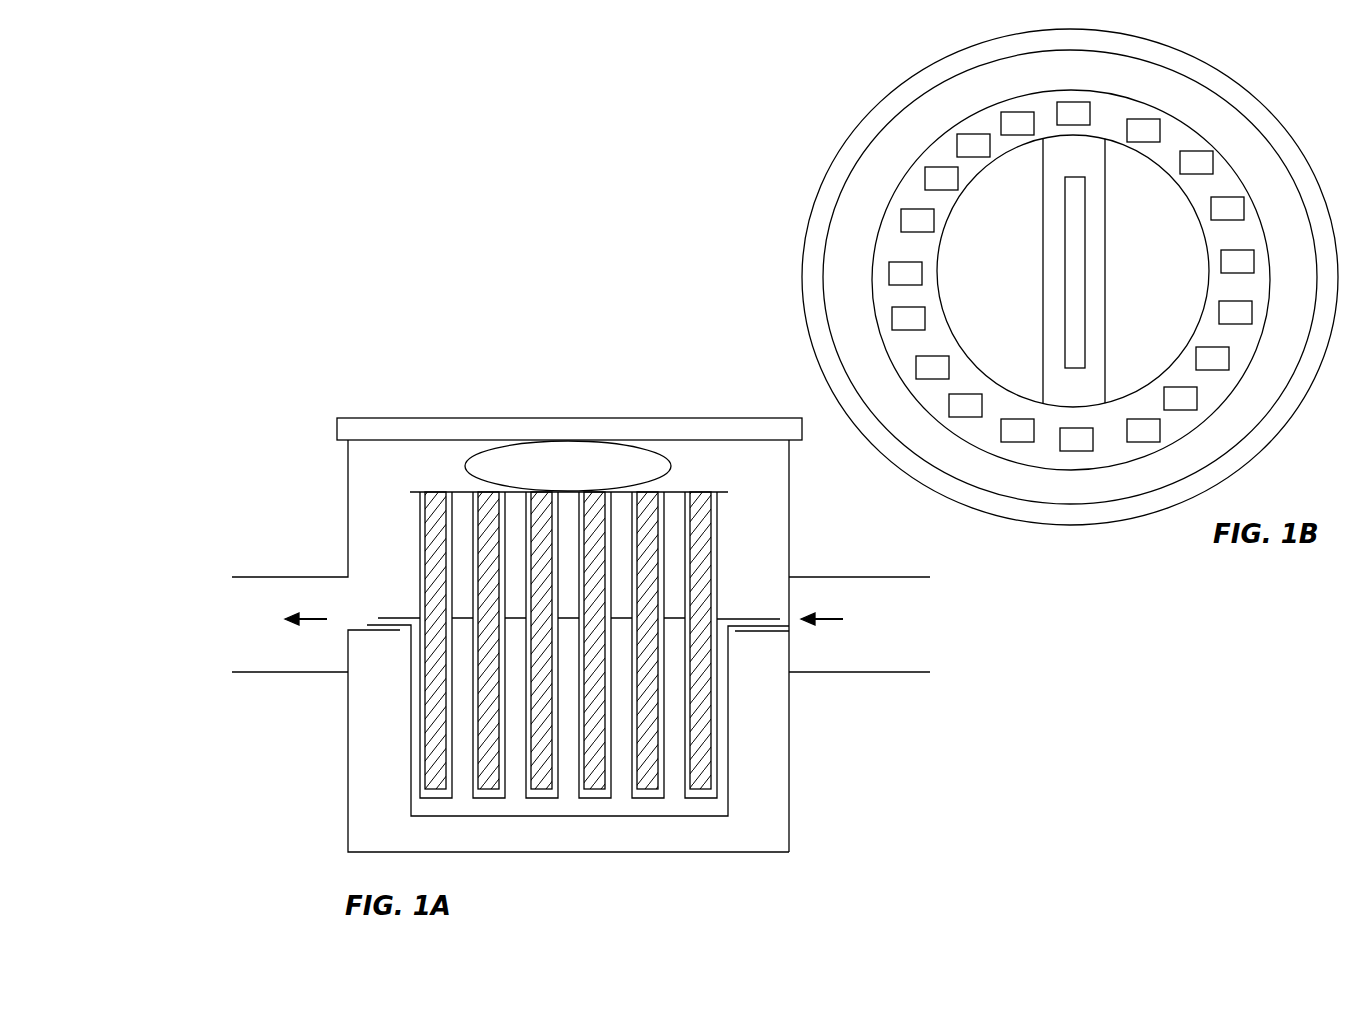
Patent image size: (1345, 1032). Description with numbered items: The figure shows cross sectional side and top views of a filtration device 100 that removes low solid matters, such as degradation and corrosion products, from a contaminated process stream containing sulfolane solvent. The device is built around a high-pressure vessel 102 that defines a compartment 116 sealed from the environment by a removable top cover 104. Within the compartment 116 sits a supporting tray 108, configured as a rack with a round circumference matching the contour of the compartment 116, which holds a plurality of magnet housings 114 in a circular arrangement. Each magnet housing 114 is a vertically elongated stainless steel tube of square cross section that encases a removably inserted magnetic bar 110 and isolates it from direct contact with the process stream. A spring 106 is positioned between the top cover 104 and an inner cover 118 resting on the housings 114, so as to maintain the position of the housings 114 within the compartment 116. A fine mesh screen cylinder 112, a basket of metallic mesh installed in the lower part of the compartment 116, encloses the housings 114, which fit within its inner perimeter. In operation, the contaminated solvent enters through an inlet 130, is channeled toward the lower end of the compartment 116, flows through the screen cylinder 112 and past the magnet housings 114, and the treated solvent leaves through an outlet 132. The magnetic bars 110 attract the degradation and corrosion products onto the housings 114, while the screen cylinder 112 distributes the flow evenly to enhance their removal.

In FIG. 1A, the filtration device 100 is at (470, 178).
In FIG. 1A, the high-pressure vessel 102 is at (347, 483).
In FIG. 1B, the high-pressure vessel 102 is at (800, 260).
In FIG. 1A, the removable top cover 104 is at (415, 418).
In FIG. 1A, the spring 106 is at (650, 450).
In FIG. 1B, the spring 106 is at (1063, 272).
In FIG. 1A, the supporting tray 108 is at (738, 618).
In FIG. 1B, the supporting tray 108 is at (947, 429).
In FIG. 1A, the magnetic bar 110 is at (703, 688).
In FIG. 1B, the magnetic bar 110 is at (1076, 450).
In FIG. 1A, the fine mesh screen cylinder 112 is at (727, 742).
In FIG. 1B, the fine mesh screen cylinder 112 is at (1158, 492).
In FIG. 1A, the magnet housing 114 is at (717, 793).
In FIG. 1A, the compartment 116 is at (368, 695).
In FIG. 1A, the inner cover 118 is at (695, 492).
In FIG. 1A, the inlet 130 is at (865, 673).
In FIG. 1A, the outlet 132 is at (333, 673).